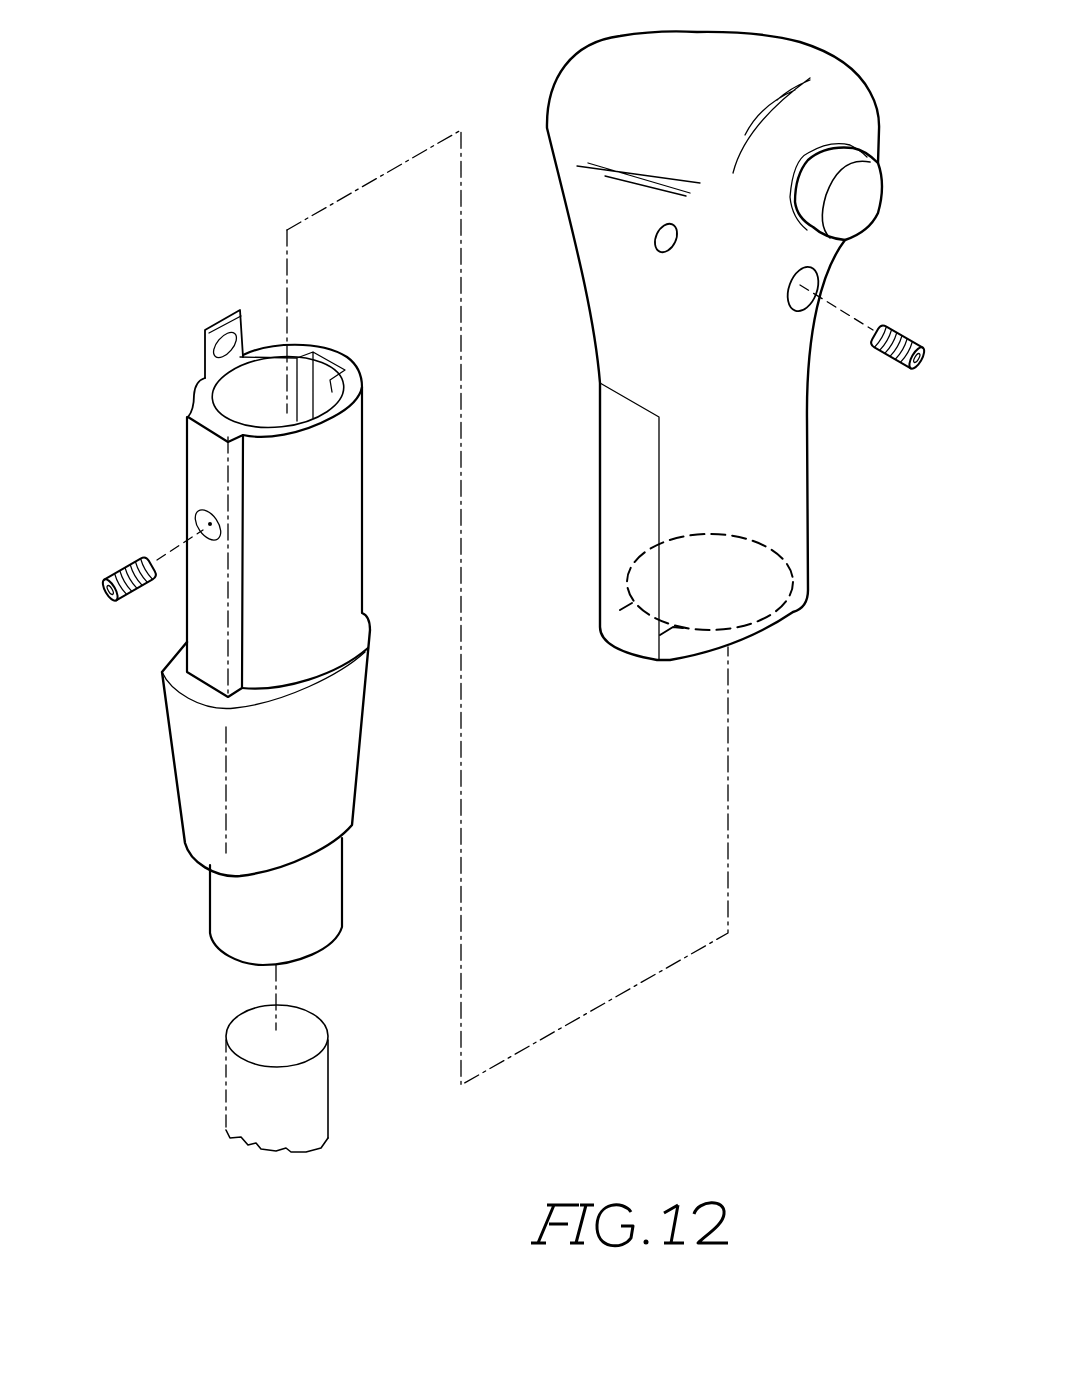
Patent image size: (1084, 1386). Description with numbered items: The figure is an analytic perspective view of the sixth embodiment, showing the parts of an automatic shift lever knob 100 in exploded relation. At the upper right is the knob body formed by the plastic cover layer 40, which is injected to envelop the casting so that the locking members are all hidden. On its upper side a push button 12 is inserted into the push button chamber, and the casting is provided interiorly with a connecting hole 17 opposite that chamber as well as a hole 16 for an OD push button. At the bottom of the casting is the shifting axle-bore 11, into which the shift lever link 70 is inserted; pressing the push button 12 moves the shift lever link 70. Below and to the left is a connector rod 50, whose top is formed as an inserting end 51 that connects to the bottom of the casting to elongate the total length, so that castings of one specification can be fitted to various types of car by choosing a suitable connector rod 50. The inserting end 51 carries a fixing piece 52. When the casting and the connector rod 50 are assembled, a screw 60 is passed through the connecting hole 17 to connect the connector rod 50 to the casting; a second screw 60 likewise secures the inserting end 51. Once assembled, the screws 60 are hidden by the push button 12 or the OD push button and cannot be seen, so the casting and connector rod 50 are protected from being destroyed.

The automatic shift lever knob 100 is at (158, 112).
The cover layer 40 is at (768, 65).
The push button 12 is at (860, 198).
The hole for an OD push button 16 is at (808, 283).
The connecting hole 17 is at (655, 243).
The shifting axle-bore 11 is at (787, 557).
The screw 60 is at (886, 357).
The inserting end 51 is at (205, 452).
The fixing piece 52 is at (202, 338).
The connector rod 50 is at (228, 887).
The shift lever link 70 is at (247, 1078).